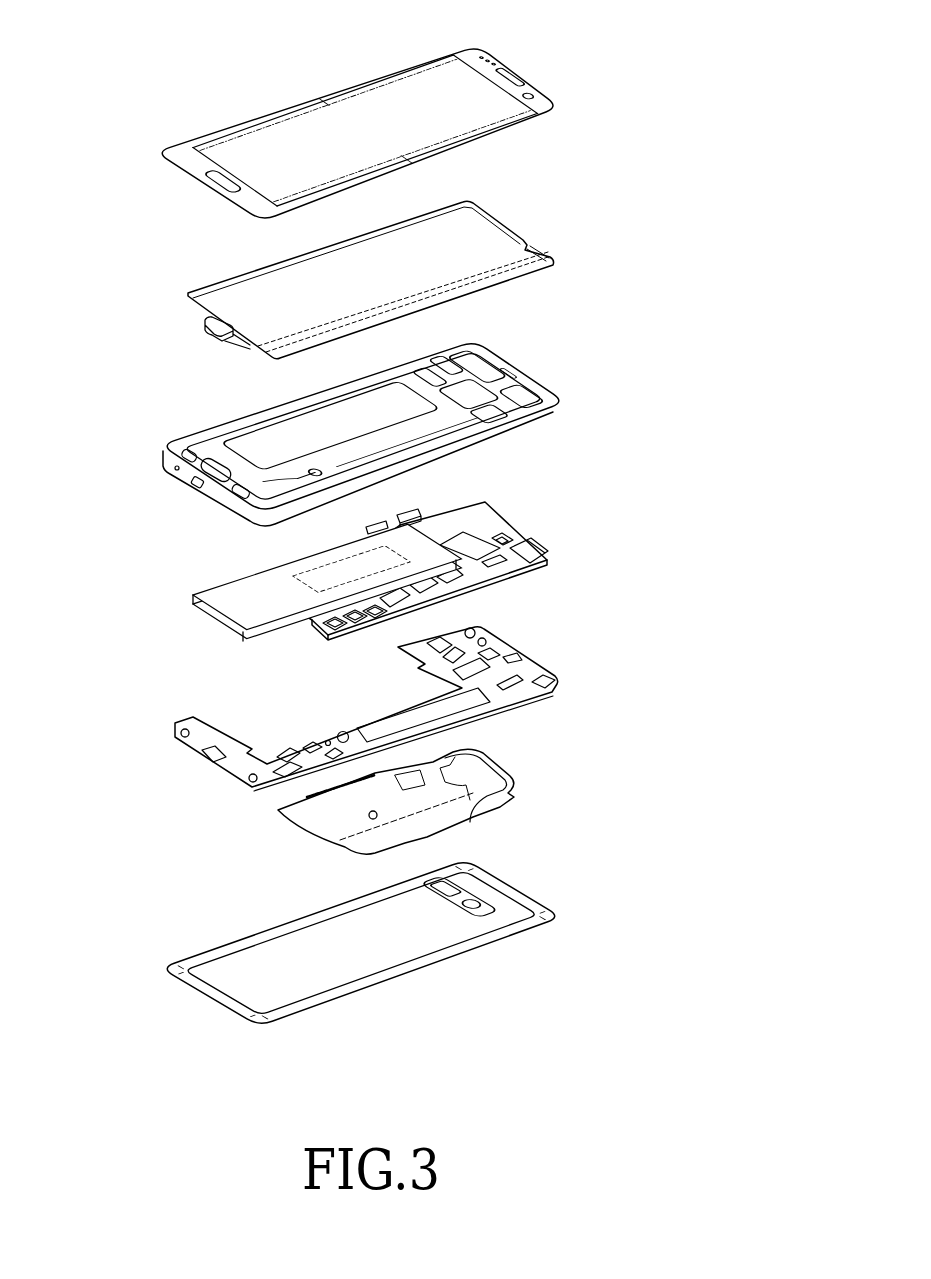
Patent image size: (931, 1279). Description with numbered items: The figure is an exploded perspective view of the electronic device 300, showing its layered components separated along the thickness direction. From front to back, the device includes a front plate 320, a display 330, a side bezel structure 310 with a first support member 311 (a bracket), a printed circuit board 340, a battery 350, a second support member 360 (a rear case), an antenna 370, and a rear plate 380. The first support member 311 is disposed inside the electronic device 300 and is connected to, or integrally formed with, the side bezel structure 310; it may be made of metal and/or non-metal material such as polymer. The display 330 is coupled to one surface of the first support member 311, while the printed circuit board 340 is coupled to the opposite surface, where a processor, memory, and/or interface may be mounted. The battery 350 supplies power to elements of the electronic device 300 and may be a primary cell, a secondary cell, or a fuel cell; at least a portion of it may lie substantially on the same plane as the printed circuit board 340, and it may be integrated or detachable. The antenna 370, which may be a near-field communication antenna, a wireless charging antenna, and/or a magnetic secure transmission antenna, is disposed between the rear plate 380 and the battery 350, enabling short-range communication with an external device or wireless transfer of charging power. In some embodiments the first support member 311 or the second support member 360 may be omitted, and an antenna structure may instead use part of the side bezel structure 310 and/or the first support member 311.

The electronic device 300 is at (118, 133).
The side bezel structure 310 is at (543, 380).
The first support member 311 is at (238, 458).
The front plate 320 is at (533, 85).
The display 330 is at (537, 245).
The printed circuit board 340 is at (513, 525).
The battery 350 is at (232, 607).
The second support member 360 is at (530, 663).
The antenna 370 is at (445, 788).
The rear plate 380 is at (507, 895).